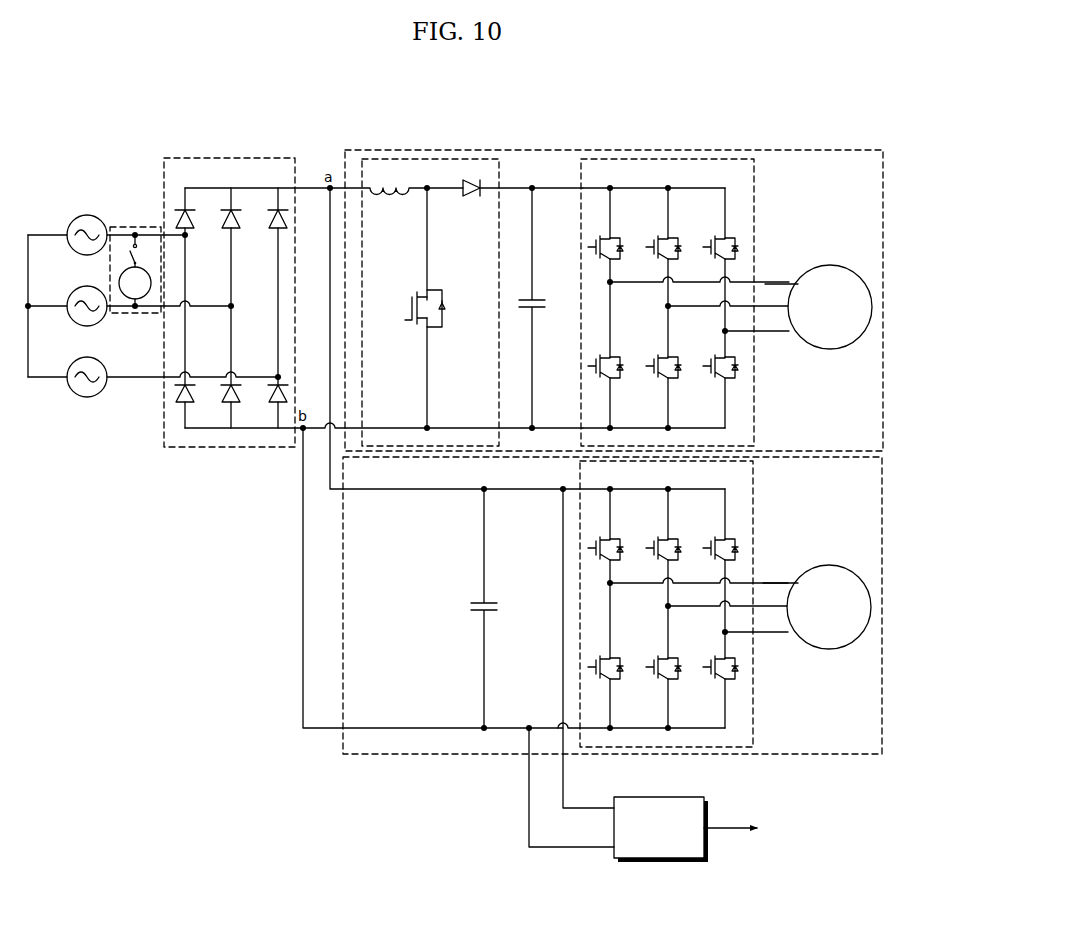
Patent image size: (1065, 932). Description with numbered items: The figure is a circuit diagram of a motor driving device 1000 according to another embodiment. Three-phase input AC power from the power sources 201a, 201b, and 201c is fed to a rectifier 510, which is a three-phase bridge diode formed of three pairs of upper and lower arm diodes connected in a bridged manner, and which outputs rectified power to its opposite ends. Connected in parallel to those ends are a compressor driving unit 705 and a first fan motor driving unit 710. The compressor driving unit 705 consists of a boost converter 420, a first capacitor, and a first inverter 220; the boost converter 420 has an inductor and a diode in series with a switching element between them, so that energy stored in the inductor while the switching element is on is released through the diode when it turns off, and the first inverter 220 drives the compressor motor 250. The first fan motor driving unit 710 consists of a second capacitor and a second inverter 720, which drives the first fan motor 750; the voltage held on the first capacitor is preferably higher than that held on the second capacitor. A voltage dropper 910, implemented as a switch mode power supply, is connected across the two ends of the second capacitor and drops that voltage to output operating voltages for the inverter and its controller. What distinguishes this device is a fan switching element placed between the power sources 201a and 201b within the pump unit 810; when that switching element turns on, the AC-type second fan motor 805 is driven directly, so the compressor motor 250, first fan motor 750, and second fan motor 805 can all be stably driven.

The motor driving device 1000 is at (144, 131).
The 3-phase AC power source (phase a) 201a is at (82, 216).
The 3-phase AC power source (phase b) 201b is at (72, 293).
The 3-phase AC power source (phase c) 201c is at (72, 364).
The pump motor unit 810 is at (149, 275).
The second fan motor 805 is at (145, 298).
The rectifier 510 is at (227, 158).
The boost converter 420 is at (477, 159).
The first inverter 220 is at (733, 159).
The compressor driving unit 705 is at (876, 151).
The compressor motor 250 is at (827, 268).
The first fan motor driving unit 710 is at (342, 748).
The second inverter 720 is at (755, 478).
The first fan motor 750 is at (827, 568).
The voltage dropper 910 is at (690, 797).